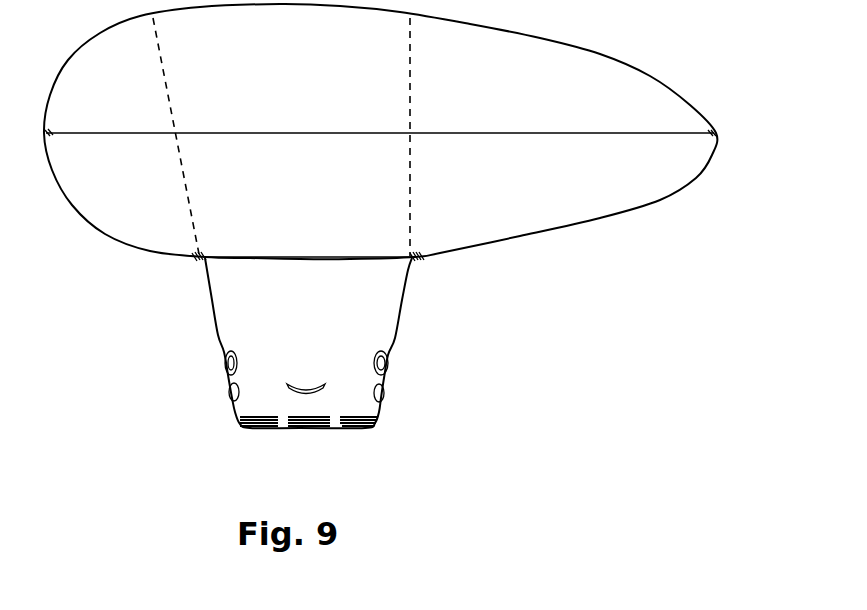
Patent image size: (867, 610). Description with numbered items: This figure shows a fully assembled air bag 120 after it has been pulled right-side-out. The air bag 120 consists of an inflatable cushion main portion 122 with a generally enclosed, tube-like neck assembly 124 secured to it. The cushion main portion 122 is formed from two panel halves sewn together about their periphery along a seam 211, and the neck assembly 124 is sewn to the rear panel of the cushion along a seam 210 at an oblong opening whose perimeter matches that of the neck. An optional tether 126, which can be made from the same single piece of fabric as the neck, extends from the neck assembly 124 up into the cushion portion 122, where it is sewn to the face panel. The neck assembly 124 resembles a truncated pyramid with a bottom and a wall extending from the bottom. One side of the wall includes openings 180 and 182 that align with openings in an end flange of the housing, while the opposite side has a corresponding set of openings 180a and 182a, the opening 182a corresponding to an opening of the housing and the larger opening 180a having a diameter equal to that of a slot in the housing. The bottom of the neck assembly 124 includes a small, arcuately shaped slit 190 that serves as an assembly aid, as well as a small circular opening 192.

The air bag 120 is at (453, 258).
The inflatable cushion main portion 122 is at (636, 80).
The neck assembly 124 is at (205, 297).
The tether 126 is at (385, 98).
The opening 180 is at (224, 360).
The opening 180a is at (385, 393).
The opening 182 is at (230, 393).
The opening 182a is at (388, 366).
The slit 190 is at (316, 382).
The circular opening 192 is at (350, 393).
The seam 210 is at (196, 252).
The seam 211 is at (56, 128).